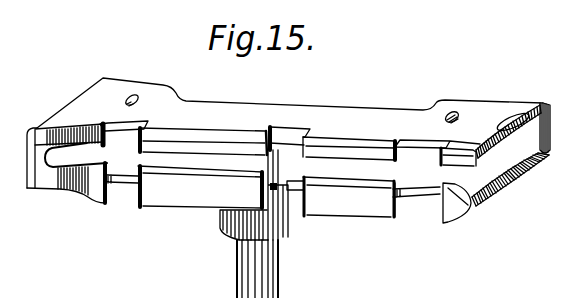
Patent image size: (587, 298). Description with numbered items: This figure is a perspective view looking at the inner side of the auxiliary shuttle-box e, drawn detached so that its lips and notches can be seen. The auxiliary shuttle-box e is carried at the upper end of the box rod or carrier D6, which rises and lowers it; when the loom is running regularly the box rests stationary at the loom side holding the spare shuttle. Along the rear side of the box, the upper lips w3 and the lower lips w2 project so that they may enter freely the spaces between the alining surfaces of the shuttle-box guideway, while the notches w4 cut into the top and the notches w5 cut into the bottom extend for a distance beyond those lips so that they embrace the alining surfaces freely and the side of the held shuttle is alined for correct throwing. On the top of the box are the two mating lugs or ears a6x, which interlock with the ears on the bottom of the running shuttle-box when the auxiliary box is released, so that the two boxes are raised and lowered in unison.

The auxiliary shuttle-box e is at (246, 108).
The notch w4 is at (125, 128).
The lip w3 is at (183, 143).
The mating lug a6x is at (132, 95).
The lip w2 is at (348, 193).
The notch w5 is at (420, 200).
The box rod D6 is at (245, 277).